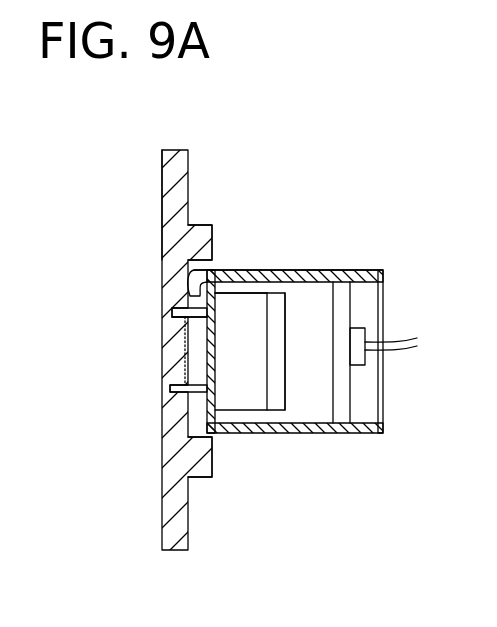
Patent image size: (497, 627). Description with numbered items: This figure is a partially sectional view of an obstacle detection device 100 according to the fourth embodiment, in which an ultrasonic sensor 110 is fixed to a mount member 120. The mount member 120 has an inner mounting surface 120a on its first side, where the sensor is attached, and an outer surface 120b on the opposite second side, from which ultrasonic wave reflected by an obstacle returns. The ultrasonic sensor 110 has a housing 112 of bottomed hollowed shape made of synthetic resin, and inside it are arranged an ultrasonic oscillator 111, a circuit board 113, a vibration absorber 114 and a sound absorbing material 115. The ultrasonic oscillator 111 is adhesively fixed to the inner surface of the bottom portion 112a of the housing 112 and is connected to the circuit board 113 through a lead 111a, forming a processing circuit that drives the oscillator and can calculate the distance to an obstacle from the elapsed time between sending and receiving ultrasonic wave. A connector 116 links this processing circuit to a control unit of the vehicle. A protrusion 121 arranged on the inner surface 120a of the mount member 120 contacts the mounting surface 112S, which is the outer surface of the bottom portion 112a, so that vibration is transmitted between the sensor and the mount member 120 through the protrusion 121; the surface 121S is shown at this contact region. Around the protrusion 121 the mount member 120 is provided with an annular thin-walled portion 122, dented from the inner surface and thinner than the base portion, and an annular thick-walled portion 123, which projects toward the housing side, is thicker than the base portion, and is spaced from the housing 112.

The obstacle detection device 100 is at (305, 202).
The ultrasonic sensor 110 is at (376, 442).
The ultrasonic oscillator 111 is at (238, 387).
The lead 111a is at (312, 322).
The housing 112 is at (303, 281).
The mounting surface 112S is at (197, 268).
The bottom portion 112a is at (188, 295).
The circuit board 113 is at (342, 301).
The vibration absorber 114 is at (310, 405).
The sound absorbing material 115 is at (270, 402).
The connector 116 is at (358, 357).
The mount member 120 is at (158, 176).
The mounting surface 120a is at (189, 170).
The outer surface 120b is at (160, 212).
The protrusion 121 is at (188, 342).
The hook surface 121S is at (215, 365).
The thin-walled portion 122 is at (162, 387).
The thick-walled portion 123 is at (199, 478).